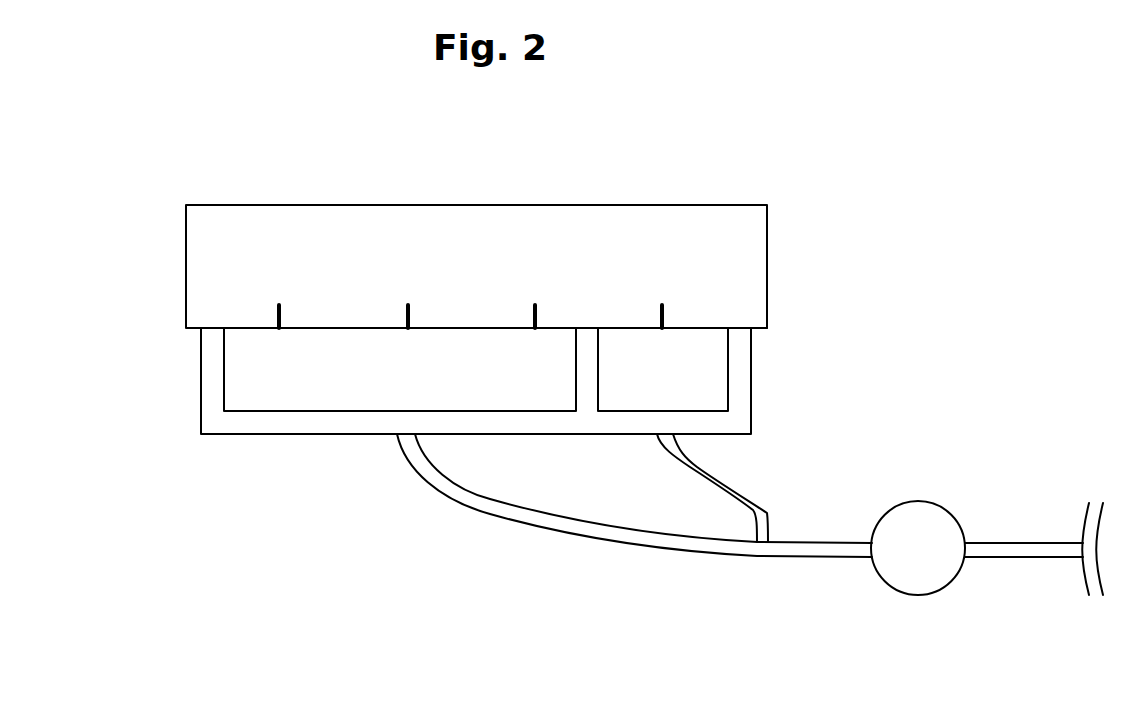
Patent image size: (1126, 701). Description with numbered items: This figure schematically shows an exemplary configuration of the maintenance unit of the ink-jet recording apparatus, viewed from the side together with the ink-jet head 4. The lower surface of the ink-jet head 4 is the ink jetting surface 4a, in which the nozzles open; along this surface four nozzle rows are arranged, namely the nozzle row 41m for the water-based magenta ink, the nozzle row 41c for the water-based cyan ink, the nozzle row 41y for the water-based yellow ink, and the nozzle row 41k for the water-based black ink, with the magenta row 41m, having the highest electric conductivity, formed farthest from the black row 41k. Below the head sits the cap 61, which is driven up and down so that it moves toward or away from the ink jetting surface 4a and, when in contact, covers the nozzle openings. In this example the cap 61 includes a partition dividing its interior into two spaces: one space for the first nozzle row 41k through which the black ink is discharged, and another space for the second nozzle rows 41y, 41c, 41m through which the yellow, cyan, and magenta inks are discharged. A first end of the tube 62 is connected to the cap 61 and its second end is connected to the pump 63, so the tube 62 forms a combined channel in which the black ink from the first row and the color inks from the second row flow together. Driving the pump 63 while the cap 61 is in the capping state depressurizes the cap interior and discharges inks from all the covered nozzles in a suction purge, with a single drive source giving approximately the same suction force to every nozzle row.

The ink-jet head 4 is at (725, 247).
The ink jetting surface 4a is at (703, 328).
The nozzle row for the water-based magenta ink 41m is at (279, 328).
The nozzle row for the water-based cyan ink 41c is at (408, 328).
The nozzle row for the water-based yellow ink 41y is at (535, 328).
The nozzle row for the water-based black ink 41k is at (662, 328).
The cap 61 is at (223, 420).
The tube 62 is at (817, 548).
The pump 63 is at (923, 580).